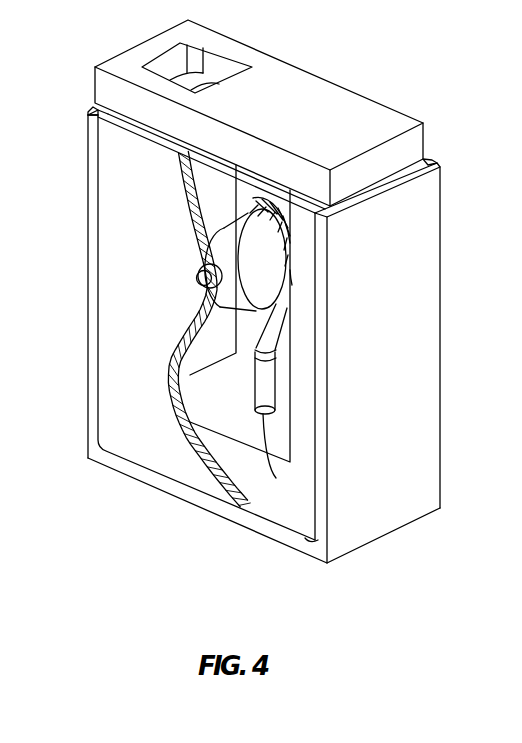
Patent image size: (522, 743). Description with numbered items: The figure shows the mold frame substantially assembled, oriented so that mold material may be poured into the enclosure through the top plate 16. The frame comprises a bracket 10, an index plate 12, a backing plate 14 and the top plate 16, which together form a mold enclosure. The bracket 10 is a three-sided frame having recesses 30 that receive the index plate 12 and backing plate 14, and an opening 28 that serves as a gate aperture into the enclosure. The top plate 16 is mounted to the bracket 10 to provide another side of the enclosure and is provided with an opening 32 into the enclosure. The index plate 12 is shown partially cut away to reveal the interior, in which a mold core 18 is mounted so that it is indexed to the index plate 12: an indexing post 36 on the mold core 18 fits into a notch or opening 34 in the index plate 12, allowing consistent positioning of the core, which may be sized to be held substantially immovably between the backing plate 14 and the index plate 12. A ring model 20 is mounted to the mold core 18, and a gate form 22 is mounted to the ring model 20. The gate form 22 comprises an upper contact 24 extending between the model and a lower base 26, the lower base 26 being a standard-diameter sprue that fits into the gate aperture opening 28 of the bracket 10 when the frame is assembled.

The bracket 10 is at (383, 537).
The index plate 12 is at (105, 251).
The backing plate 14 is at (250, 343).
The top plate 16 is at (330, 78).
The mold core 18 is at (268, 268).
The ring model 20 is at (233, 202).
The gate form 22 is at (280, 333).
The upper contact 24 is at (278, 318).
The lower base 26 is at (258, 403).
The opening 28 is at (273, 477).
The recess 30 is at (95, 115).
The opening 32 is at (223, 50).
The notch or opening 34 is at (199, 276).
The indexing post 36 is at (201, 283).